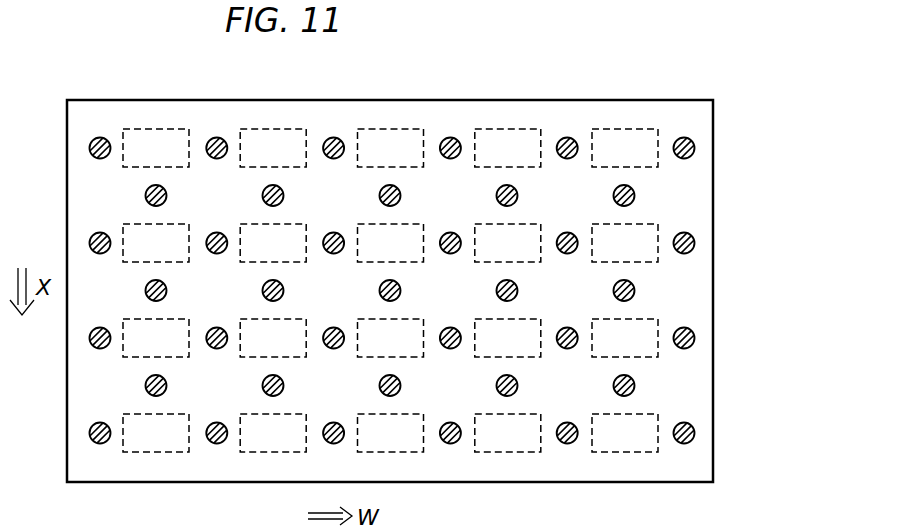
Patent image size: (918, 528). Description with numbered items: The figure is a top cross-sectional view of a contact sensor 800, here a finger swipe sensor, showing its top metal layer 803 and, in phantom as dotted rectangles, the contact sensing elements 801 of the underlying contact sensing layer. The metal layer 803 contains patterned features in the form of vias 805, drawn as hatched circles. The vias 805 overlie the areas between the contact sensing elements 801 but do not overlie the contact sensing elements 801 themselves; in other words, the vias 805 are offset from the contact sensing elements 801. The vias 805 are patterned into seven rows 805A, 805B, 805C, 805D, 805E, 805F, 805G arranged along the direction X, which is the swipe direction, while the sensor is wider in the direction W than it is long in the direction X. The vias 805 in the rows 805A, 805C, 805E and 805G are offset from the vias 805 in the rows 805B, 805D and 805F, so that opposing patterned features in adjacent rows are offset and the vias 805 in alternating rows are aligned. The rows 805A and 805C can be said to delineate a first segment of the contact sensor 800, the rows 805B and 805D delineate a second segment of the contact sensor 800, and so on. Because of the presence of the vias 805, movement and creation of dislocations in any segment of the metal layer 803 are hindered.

The contact sensor 800 is at (580, 78).
The contact sensing elements 801 is at (157, 129).
The metal layer 803 is at (682, 118).
The vias 805 is at (97, 138).
The first row of vias 805A is at (435, 106).
The second row of vias 805B is at (725, 166).
The third row of vias 805C is at (725, 214).
The fourth row of vias 805D is at (725, 262).
The fifth row of vias 805E is at (725, 309).
The sixth row of vias 805F is at (725, 356).
The seventh row of vias 805G is at (725, 404).